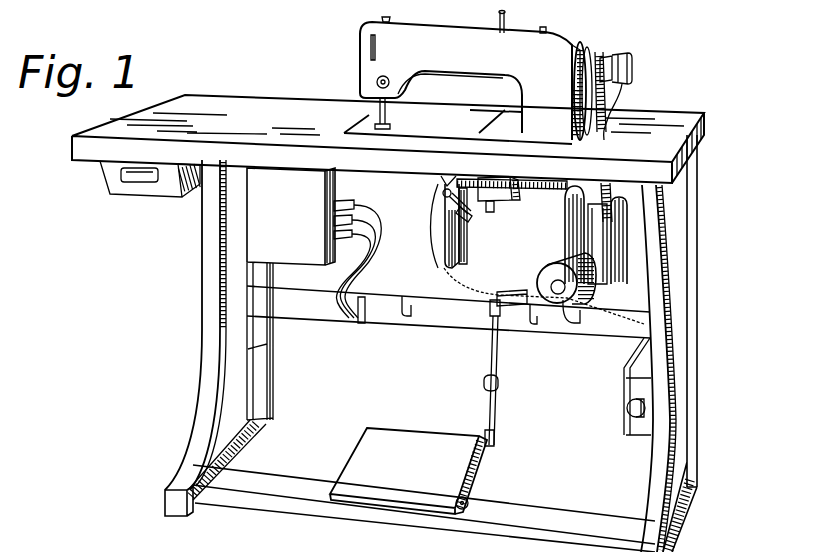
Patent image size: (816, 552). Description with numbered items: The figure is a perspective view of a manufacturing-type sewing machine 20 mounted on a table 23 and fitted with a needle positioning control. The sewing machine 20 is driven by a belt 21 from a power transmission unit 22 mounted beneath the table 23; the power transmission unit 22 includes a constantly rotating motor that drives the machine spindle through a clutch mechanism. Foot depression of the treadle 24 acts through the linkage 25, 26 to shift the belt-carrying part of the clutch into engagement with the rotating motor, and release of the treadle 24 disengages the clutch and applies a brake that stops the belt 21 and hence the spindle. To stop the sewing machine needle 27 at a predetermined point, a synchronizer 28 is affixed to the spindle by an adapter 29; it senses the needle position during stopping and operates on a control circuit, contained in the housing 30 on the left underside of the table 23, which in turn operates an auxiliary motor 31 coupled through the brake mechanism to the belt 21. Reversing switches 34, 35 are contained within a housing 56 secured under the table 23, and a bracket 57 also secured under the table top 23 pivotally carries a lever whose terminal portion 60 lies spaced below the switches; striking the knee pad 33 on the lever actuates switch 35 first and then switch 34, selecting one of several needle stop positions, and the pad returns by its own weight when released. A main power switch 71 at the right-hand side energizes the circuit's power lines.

The sewing machine 20 is at (434, 56).
The belt 21 is at (613, 186).
The power transmission unit 22 is at (546, 242).
The table 23 is at (261, 124).
The treadle 24 is at (438, 470).
The linkage 25 is at (498, 352).
The linkage 26 is at (523, 296).
The sewing machine needle 27 is at (377, 125).
The synchronizer 28 is at (634, 66).
The adapter 29 is at (601, 57).
The housing 30 is at (298, 238).
The auxiliary motor 31 is at (569, 266).
The knee pad 33 is at (444, 256).
The reversing switch 34 is at (494, 208).
The reversing switch 35 is at (499, 189).
The housing 56 is at (476, 186).
The bracket 57 is at (442, 195).
The terminal portion 60 is at (467, 219).
The main power switch 71 is at (630, 437).